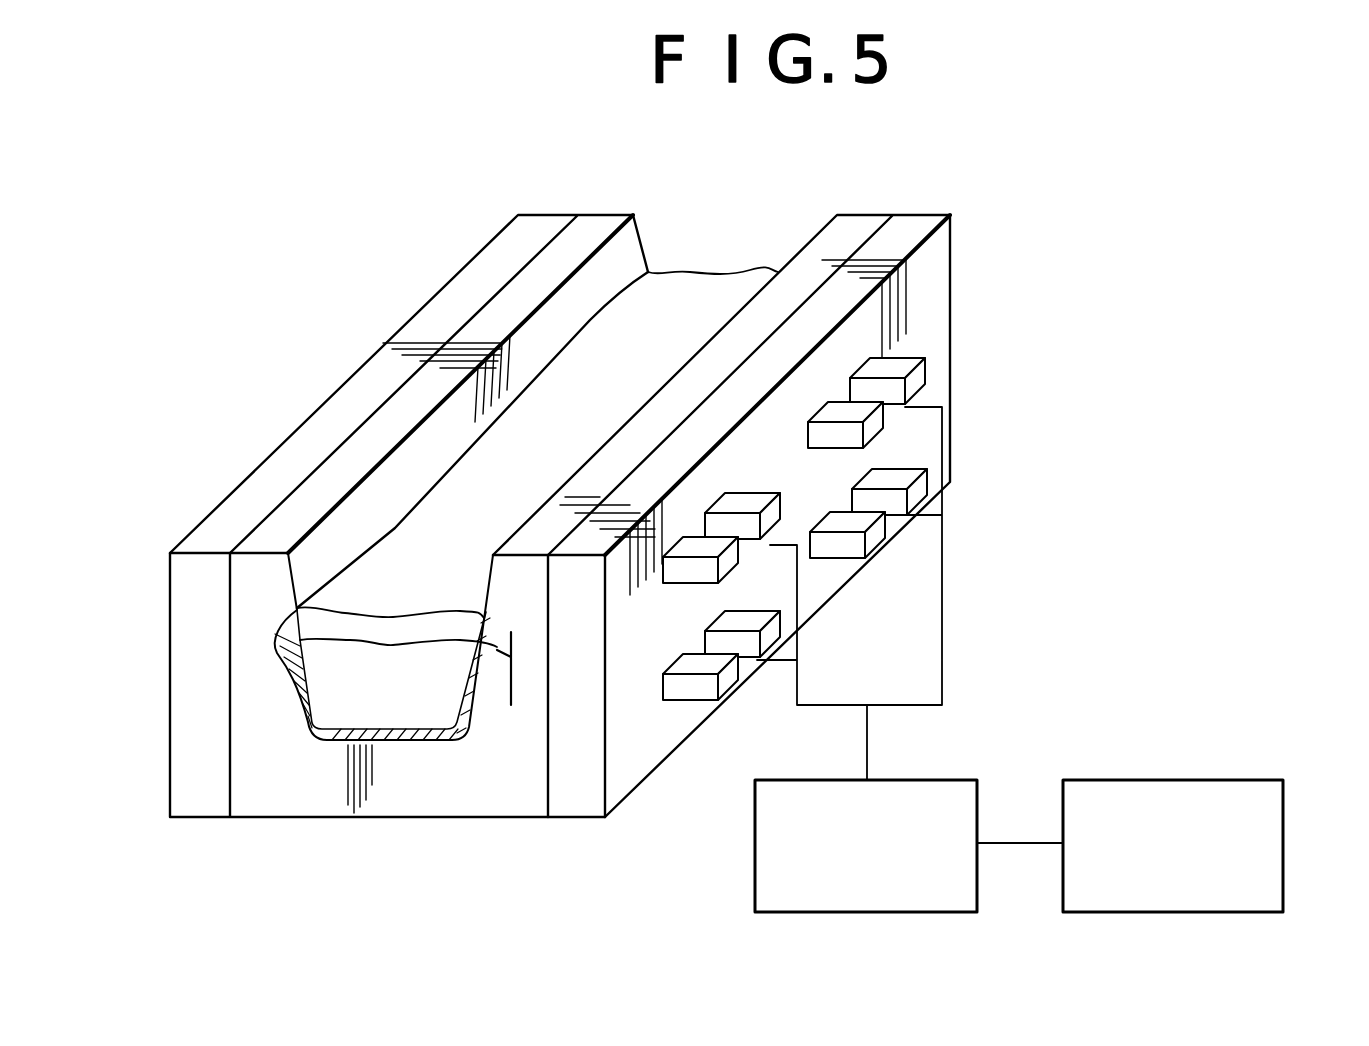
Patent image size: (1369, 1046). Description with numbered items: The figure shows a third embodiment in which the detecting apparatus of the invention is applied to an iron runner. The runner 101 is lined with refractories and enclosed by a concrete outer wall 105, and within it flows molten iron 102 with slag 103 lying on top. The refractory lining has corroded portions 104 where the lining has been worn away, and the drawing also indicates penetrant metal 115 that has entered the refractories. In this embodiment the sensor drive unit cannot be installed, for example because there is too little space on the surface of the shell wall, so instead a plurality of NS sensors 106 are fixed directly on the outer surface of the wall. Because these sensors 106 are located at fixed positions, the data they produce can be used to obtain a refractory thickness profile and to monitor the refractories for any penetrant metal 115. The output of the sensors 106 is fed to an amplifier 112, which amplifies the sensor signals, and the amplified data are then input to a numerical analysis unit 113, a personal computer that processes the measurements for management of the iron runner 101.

The runner 101 is at (463, 803).
The molten iron 102 is at (338, 710).
The slag 103 is at (458, 588).
The corroded portions 104 is at (382, 740).
The concrete outer wall 105 is at (568, 805).
The NS sensor 106 is at (820, 430).
The amplifier 112 is at (962, 787).
The numerical analysis unit 113 is at (1095, 793).
The penetrant metal 115 is at (510, 704).